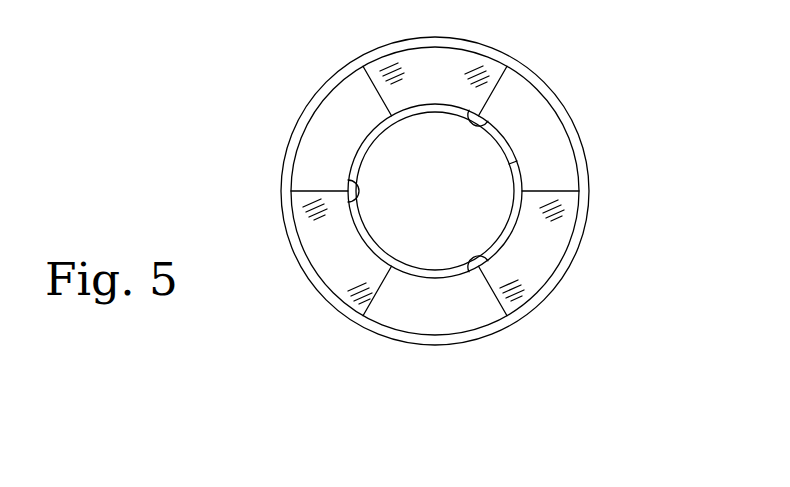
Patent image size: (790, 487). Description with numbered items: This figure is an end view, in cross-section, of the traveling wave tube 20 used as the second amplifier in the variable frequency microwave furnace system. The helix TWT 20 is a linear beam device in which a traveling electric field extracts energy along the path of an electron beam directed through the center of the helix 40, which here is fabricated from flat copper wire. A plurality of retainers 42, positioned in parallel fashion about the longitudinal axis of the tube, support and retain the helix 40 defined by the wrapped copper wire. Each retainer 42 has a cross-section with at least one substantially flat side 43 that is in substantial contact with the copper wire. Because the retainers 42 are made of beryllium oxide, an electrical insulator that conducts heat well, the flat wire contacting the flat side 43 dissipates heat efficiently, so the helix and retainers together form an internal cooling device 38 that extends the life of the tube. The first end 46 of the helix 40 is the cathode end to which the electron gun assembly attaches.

The traveling wave tube 20 is at (604, 73).
The internal cooling device 38 is at (398, 312).
The helix 40 is at (368, 132).
The retainers 42 is at (448, 89).
The flat side 43 is at (483, 120).
The first end 46 is at (518, 165).